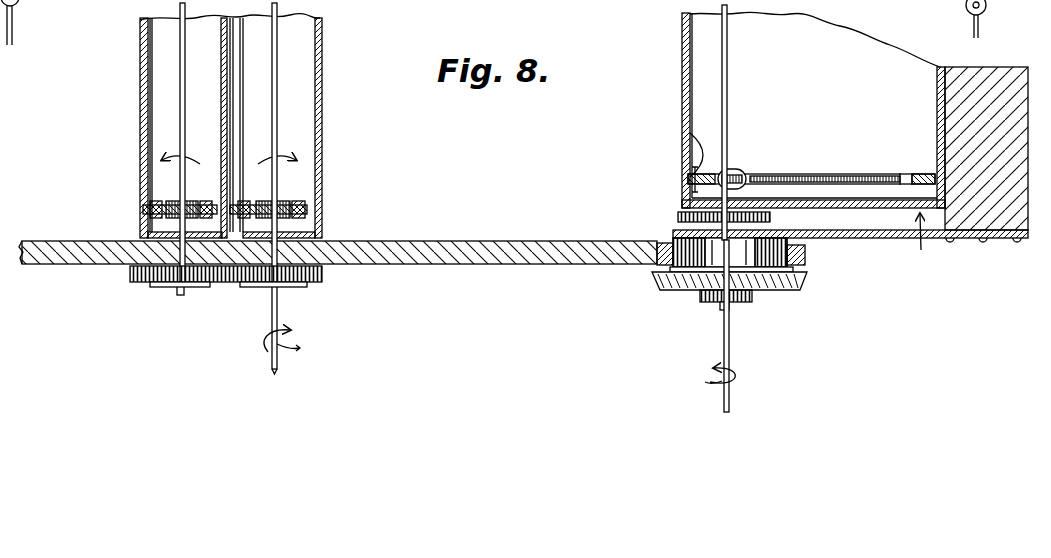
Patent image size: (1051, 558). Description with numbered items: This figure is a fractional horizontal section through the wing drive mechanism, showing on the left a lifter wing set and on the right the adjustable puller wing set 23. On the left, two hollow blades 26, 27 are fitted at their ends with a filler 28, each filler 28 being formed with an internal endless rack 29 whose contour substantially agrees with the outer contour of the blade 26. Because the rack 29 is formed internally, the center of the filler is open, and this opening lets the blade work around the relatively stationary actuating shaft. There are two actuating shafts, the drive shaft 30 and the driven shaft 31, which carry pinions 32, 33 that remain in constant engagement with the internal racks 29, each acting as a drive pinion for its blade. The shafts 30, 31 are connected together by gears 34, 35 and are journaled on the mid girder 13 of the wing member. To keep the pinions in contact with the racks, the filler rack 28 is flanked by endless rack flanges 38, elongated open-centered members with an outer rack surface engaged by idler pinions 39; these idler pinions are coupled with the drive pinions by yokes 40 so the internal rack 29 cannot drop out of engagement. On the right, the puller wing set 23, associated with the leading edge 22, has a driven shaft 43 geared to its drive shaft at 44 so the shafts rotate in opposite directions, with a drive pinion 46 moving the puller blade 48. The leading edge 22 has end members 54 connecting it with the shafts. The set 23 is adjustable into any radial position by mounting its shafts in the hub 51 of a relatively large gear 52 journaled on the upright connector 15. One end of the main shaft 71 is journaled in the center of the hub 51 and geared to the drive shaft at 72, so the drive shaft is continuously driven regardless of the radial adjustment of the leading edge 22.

The mid girder 13 is at (490, 234).
The upright connector 15 is at (806, 256).
The leading edge 22 is at (989, 80).
The puller wing set 23 is at (816, 143).
The blade 26 is at (321, 99).
The blade 27 is at (141, 146).
The filler 28 is at (150, 208).
The internal endless rack 29 is at (306, 218).
The drive shaft 30 is at (278, 72).
The driven shaft 31 is at (180, 57).
The pinion 32 is at (266, 206).
The pinion 33 is at (186, 206).
The gear 34 is at (318, 282).
The gear 35 is at (135, 282).
The endless rack flange 38 is at (160, 200).
The idler pinion 39 is at (693, 172).
The yoke 40 is at (700, 142).
The driven shaft 43 is at (722, 108).
The gearing 44 is at (680, 213).
The drive pinion 46 is at (740, 172).
The puller blade 48 is at (938, 151).
The hub 51 is at (674, 240).
The large gear 52 is at (803, 285).
The end member 54 is at (899, 238).
The main shaft 71 is at (730, 354).
The gearing 72 is at (750, 300).